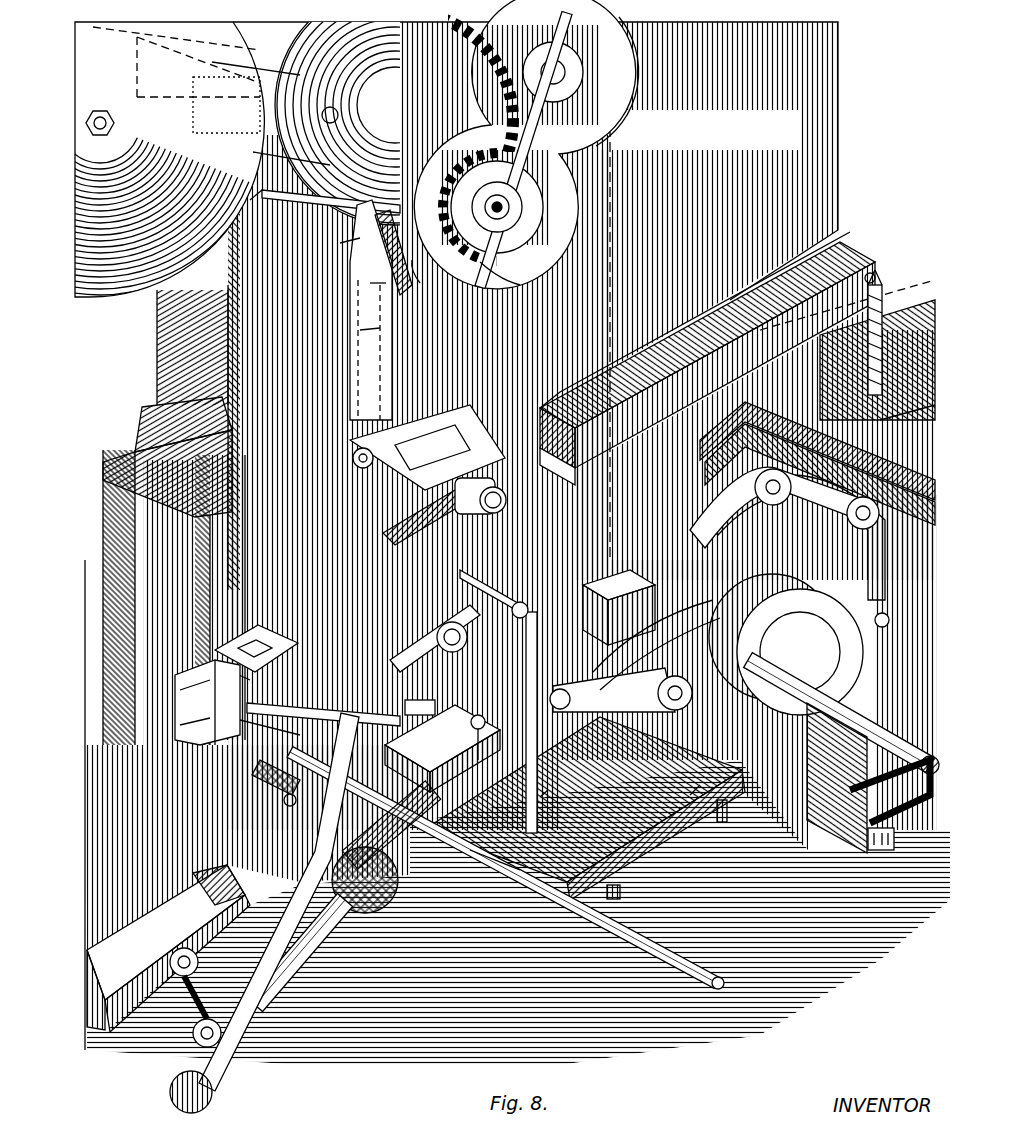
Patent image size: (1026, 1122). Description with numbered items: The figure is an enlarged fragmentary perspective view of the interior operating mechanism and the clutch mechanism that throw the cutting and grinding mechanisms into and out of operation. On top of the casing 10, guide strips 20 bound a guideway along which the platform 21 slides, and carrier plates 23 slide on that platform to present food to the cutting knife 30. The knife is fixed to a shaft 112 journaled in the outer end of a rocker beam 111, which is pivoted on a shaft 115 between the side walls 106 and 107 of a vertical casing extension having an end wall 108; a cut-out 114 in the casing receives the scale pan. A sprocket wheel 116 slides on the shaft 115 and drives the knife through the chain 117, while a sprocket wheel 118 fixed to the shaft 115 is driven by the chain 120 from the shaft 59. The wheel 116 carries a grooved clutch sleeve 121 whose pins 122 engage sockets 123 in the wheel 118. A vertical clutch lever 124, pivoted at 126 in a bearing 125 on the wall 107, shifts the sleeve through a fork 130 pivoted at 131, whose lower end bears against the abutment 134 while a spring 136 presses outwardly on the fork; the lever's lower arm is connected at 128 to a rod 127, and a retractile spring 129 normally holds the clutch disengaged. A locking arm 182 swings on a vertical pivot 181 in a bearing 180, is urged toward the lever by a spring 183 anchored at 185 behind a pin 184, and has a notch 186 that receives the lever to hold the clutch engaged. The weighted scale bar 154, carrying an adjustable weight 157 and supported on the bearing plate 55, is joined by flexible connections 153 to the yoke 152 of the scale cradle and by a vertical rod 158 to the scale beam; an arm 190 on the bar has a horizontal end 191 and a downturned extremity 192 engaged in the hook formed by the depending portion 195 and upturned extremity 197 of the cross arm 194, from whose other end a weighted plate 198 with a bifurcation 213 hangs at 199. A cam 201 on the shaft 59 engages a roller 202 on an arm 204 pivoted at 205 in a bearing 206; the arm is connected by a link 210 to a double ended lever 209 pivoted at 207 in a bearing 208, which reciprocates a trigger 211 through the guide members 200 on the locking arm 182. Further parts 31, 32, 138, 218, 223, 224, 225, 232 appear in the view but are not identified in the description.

The casing 10 is at (925, 845).
The guide strips 20 is at (563, 441).
The platform 21 is at (720, 370).
The carrier plates 23 is at (880, 420).
The cutting knife 30 is at (136, 148).
The screw 31 is at (884, 305).
The bolt 32 is at (873, 275).
The bearing plate 55 is at (668, 796).
The shaft 59 is at (825, 735).
The side wall 106 is at (250, 322).
The side wall 107 is at (719, 198).
The end wall 108 is at (174, 559).
The rocker beam 111 is at (240, 65).
The shaft 112 is at (110, 123).
The cut-out 114 is at (103, 645).
The shaft 115 is at (515, 212).
The sprocket wheel 116 is at (440, 155).
The endless chain 117 is at (265, 205).
The sprocket wheel 118 is at (395, 62).
The endless chain 120 is at (271, 152).
The grooved clutch sleeve 121 is at (330, 212).
The clutch pins 122 is at (336, 119).
The clutch sockets 123 is at (212, 112).
The clutch lever 124 is at (350, 402).
The bearing 125 is at (428, 475).
The pivot 126 is at (353, 460).
The rod 127 is at (700, 980).
The rod connection 128 is at (393, 825).
The retractile spring 129 is at (186, 948).
The fork 130 is at (342, 243).
The pivot 131 is at (370, 283).
The abutment 134 is at (410, 320).
The spring 136 is at (420, 283).
The link 138 is at (360, 330).
The yoke portion 152 is at (178, 985).
The flexible connections 153 is at (198, 1037).
The weighted scale bar 154 is at (302, 953).
The adjustable weight 157 is at (370, 912).
The vertical rod 158 is at (612, 245).
The bearing 180 is at (205, 640).
The vertical pivot 181 is at (262, 632).
The locking arm 182 is at (585, 808).
The spring 183 is at (268, 775).
The pin 184 is at (260, 735).
The spring anchorage 185 is at (220, 705).
The notch 186 is at (323, 698).
The arm 190 is at (255, 1022).
The horizontal end portion 191 is at (439, 748).
The downturned extremity 192 is at (244, 663).
The cross arm 194 is at (435, 638).
The depending portion 195 is at (424, 693).
The upturned extremity 197 is at (285, 802).
The weighted plate 198 is at (548, 790).
The pivotal suspension 199 is at (495, 583).
The guide members 200 is at (485, 863).
The eccentric cam 201 is at (800, 652).
The antifriction roller 202 is at (786, 644).
The upwardly projecting arm 204 is at (880, 684).
The horizontal pivot 205 is at (886, 826).
The bearing 206 is at (888, 850).
The horizontal pivot 207 is at (690, 610).
The bearing 208 is at (620, 580).
The double ended lever 209 is at (705, 520).
The link 210 is at (784, 507).
The trigger 211 is at (872, 338).
The bifurcation 213 is at (475, 720).
The pin 218 is at (889, 625).
The plate edge 223 is at (482, 262).
The shaft 224 is at (525, 117).
The hub 225 is at (557, 75).
The plate 232 is at (630, 84).